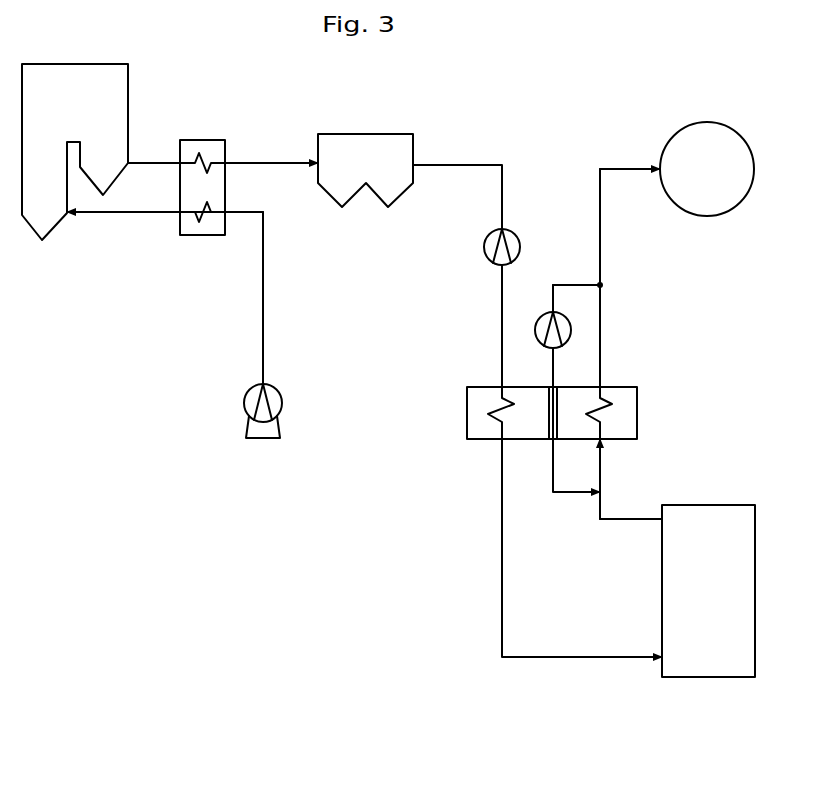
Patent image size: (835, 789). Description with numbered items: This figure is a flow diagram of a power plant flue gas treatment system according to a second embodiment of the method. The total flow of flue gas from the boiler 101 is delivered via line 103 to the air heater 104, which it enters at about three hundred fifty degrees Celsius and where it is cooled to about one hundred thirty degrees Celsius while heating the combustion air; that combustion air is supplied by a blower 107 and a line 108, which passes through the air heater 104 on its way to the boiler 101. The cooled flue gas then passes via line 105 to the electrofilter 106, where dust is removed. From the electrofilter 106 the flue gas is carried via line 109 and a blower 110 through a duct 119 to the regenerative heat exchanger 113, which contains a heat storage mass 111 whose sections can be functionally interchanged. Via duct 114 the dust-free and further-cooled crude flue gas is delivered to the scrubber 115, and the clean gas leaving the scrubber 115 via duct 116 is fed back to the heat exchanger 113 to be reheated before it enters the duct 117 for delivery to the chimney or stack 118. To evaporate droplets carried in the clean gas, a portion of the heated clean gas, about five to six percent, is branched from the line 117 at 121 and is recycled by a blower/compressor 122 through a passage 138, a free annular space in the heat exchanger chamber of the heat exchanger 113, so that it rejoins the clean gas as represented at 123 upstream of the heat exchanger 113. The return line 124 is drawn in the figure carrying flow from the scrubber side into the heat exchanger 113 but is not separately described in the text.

The boiler 101 is at (128, 91).
The line 103 is at (148, 160).
The air heater 104 is at (210, 140).
The line 105 is at (260, 162).
The electrofilter 106 is at (370, 132).
The blower 107 is at (283, 400).
The line 108 is at (265, 273).
The line 109 is at (448, 163).
The blower 110 is at (508, 228).
The heat storage mass 111 is at (483, 427).
The regenerative heat exchanger 113 is at (467, 411).
The duct 114 is at (500, 557).
The scrubber 115 is at (688, 668).
The duct 116 is at (620, 520).
The duct 117 is at (602, 345).
The chimney or stack 118 is at (672, 133).
The duct 119 is at (500, 343).
The branch point 121 is at (575, 282).
The blower/compressor 122 is at (545, 313).
The rejoining point 123 is at (568, 495).
The line 124 is at (602, 462).
The passage 138 is at (548, 413).